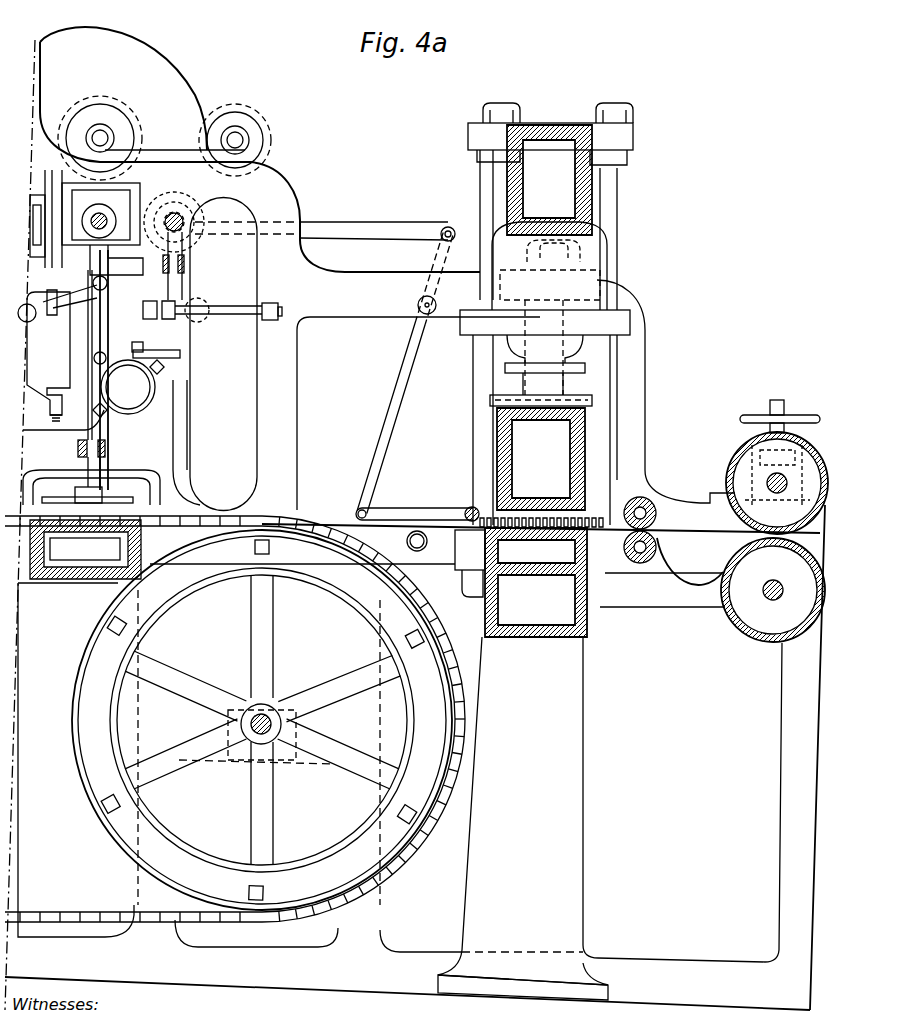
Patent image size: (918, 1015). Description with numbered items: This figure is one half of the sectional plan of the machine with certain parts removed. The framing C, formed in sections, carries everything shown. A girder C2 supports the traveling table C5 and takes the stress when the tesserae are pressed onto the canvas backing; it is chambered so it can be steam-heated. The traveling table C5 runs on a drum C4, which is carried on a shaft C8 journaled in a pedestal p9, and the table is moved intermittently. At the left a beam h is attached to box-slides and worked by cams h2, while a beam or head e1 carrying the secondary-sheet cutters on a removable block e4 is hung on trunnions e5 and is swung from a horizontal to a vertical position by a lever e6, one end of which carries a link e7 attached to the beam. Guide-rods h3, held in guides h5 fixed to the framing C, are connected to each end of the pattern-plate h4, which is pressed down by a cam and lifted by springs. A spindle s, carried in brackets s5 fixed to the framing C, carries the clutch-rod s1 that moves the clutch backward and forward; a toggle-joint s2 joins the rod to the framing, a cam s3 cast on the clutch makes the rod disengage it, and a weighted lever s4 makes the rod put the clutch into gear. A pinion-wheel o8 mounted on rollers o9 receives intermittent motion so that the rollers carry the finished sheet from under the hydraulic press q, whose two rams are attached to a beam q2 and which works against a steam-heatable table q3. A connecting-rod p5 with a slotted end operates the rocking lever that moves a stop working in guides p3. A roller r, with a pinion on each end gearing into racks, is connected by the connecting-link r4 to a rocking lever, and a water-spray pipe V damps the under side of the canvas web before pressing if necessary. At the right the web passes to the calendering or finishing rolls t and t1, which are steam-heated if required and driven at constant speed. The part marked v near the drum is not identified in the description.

The framing C is at (415, 518).
The beam h is at (122, 196).
The cams h2 is at (101, 214).
The pinion-wheel o8 is at (185, 212).
The cam s3 is at (196, 234).
The toggle-joint s2 is at (165, 266).
The clutch-rod s1 is at (183, 303).
The weighted lever s4 is at (206, 311).
The spindle s is at (202, 318).
The brackets s5 is at (272, 303).
The lever e6 is at (52, 297).
The removable block e4 is at (48, 356).
The beam or head e1 is at (82, 355).
The link e7 is at (108, 346).
The trunnions e5 is at (136, 379).
The guide-rods h3 is at (106, 446).
The guides h5 is at (81, 450).
The pattern-plate h4 is at (130, 498).
The hydraulic press q is at (546, 249).
The beam q2 is at (541, 452).
The table q3 is at (536, 582).
The connecting-rod p5 is at (375, 232).
The guides p3 is at (443, 258).
The connecting-link r4 is at (396, 512).
The roller r is at (466, 512).
The water-spray pipe V is at (423, 543).
The rollers o9 is at (650, 530).
The calendering or finishing roll t is at (777, 467).
The calendering or finishing roll t1 is at (780, 598).
The wheel rim v is at (80, 800).
The drum C4 is at (90, 640).
The shaft C8 is at (284, 724).
The pedestal p9 is at (276, 764).
The traveling table C5 is at (235, 719).
The girder C2 is at (58, 580).